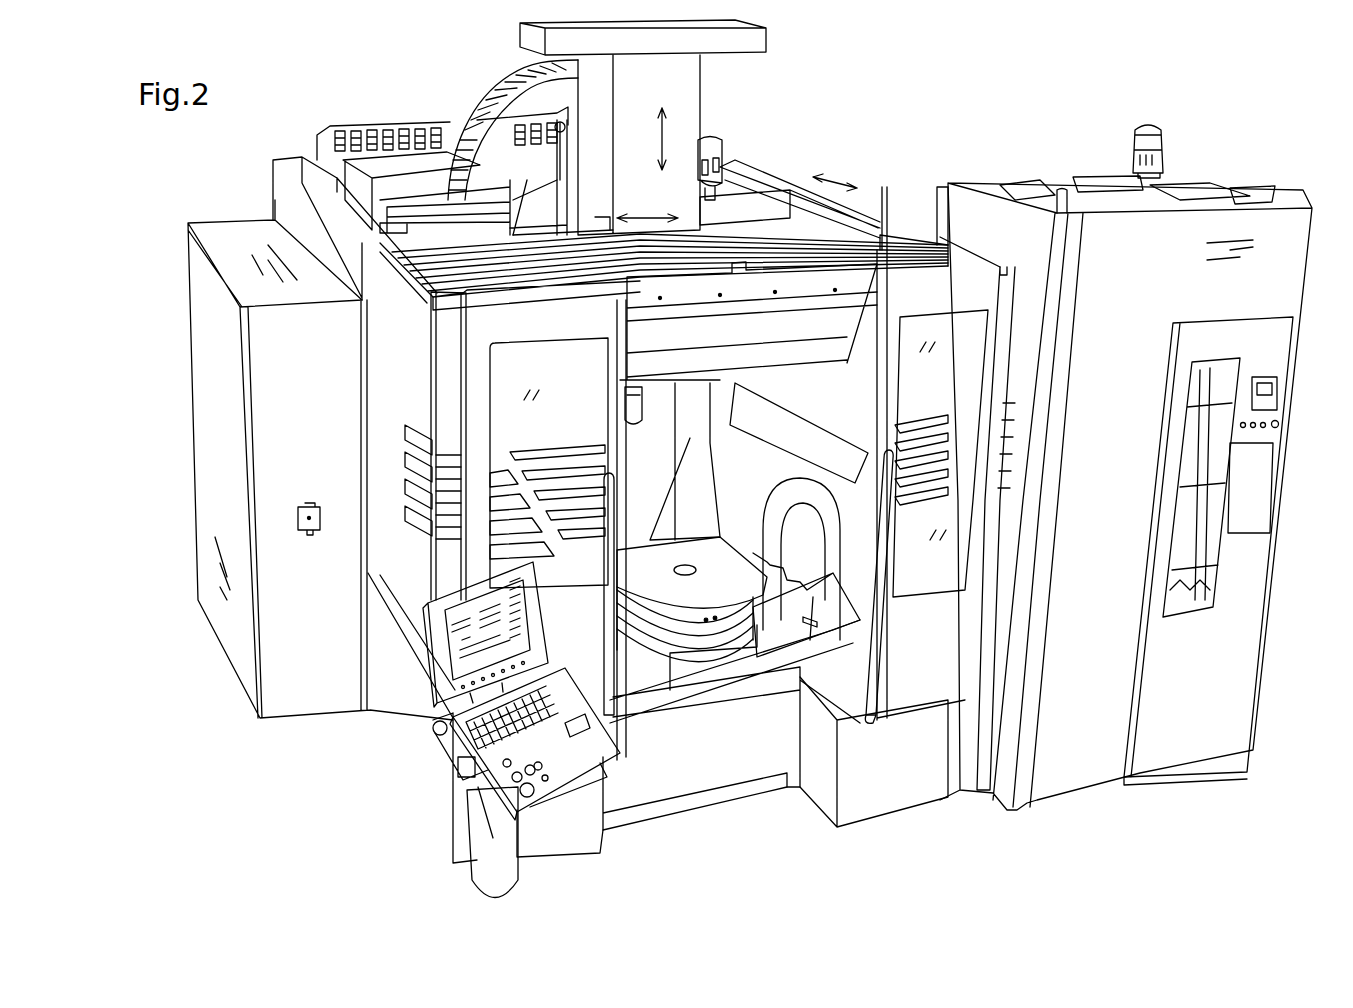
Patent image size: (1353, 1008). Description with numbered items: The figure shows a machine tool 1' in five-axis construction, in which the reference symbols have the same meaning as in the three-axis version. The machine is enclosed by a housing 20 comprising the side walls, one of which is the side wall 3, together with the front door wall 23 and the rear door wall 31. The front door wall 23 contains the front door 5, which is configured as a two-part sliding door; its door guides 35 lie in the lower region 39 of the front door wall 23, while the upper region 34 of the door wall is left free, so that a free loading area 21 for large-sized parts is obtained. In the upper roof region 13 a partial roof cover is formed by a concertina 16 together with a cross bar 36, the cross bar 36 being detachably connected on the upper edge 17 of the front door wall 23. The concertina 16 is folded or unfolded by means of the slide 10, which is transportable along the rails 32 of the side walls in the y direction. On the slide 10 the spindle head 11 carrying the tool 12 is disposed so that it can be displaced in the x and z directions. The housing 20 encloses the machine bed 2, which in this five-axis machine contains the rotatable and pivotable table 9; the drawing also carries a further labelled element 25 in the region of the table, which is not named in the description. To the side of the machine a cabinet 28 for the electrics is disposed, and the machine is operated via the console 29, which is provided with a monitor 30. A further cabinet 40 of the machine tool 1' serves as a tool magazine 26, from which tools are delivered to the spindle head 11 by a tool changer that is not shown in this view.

The machine tool 1' is at (1031, 89).
The machine bed 2 is at (837, 618).
The side wall 3 is at (285, 183).
The front door 5 is at (552, 332).
The rotatable and pivotable table 9 is at (773, 638).
The slide 10 is at (740, 185).
The spindle head 11 is at (683, 93).
The tool 12 is at (625, 402).
The upper roof region 13 is at (747, 213).
The concertina 16 is at (880, 230).
The upper edge 17 is at (432, 290).
The housing 20 is at (381, 356).
The free loading area 21 is at (692, 437).
The front door wall 23 is at (907, 770).
The workpiece table 25 is at (728, 567).
The tool magazine 26 is at (1207, 407).
The cabinet 28 is at (298, 677).
The console 29 is at (500, 763).
The monitor 30 is at (448, 682).
The rear door wall 31 is at (633, 443).
The rails 32 is at (387, 200).
The upper region 34 is at (900, 233).
The door guides 35 is at (790, 640).
The cross bar 36 is at (812, 304).
The lower region 39 is at (707, 577).
The cabinet 40 is at (1175, 718).